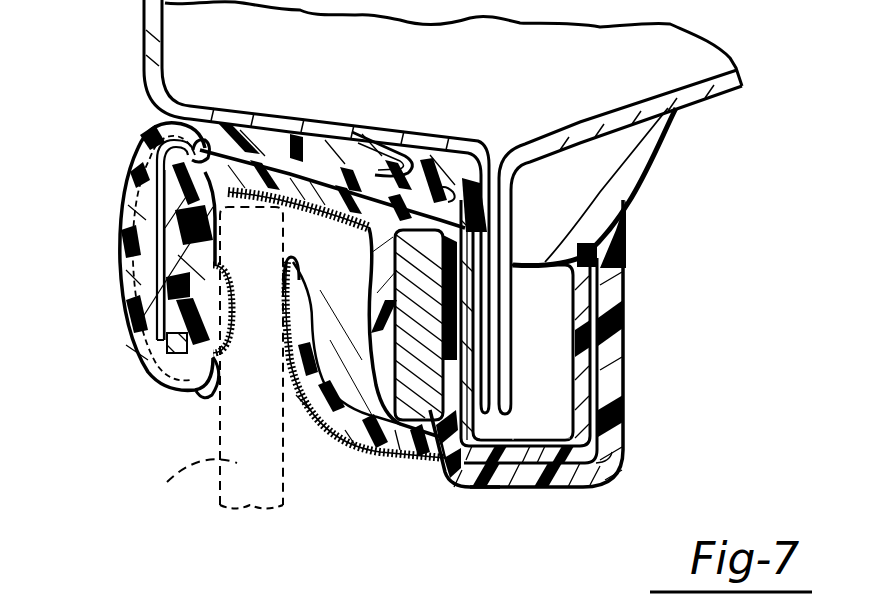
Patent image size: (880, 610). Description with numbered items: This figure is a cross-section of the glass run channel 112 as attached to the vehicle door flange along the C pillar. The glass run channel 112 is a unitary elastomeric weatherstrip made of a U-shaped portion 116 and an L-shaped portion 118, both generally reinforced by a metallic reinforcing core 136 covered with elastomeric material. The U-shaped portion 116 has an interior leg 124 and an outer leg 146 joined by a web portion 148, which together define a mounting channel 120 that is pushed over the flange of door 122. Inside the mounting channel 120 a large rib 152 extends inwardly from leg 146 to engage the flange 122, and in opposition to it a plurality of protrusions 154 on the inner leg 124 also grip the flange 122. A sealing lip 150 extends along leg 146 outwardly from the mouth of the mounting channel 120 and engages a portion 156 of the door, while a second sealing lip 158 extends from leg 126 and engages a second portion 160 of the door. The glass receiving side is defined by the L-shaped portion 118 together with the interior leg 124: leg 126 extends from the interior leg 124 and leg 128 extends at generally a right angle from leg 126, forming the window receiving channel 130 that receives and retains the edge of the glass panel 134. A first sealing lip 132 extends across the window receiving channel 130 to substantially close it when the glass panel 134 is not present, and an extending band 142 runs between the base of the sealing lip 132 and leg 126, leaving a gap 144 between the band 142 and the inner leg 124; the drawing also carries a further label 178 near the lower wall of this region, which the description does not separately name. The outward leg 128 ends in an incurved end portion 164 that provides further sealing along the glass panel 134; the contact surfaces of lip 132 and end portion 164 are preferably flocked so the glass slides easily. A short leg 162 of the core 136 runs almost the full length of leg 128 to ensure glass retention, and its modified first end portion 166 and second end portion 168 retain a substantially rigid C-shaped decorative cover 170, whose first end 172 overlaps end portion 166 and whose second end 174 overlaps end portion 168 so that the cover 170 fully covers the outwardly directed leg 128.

The glass run channel 112 is at (622, 473).
The U-shaped portion 116 is at (612, 343).
The L-shaped portion 118 is at (215, 148).
The mounting channel 120 is at (562, 403).
The flange of door 122 is at (480, 488).
The interior leg 124 is at (430, 470).
The leg 126 is at (307, 143).
The leg 128 is at (122, 252).
The window receiving channel 130 is at (340, 251).
The first sealing lip 132 is at (305, 290).
The glass panel 134 is at (209, 359).
The metallic reinforcing core 136 is at (247, 160).
The extending band 142 is at (383, 307).
The gap 144 is at (357, 443).
The leg 146 is at (612, 258).
The web portion 148 is at (570, 482).
The sealing lip 150 is at (633, 165).
The large rib 152 is at (547, 248).
The protrusions 154 is at (473, 280).
The portion of the door 156 is at (704, 90).
The sealing lip 158 is at (417, 167).
The second portion of the door 160 is at (392, 143).
The leg of core 162 is at (160, 212).
The incurved end portion 164 is at (205, 283).
The first end portion 166 is at (148, 153).
The second end portion 168 is at (165, 366).
The C-shaped decorative cover 170 is at (128, 313).
The first end of decorative cover 172 is at (185, 118).
The second end of decorative cover 174 is at (207, 383).
The flocked bottom 178 is at (390, 447).